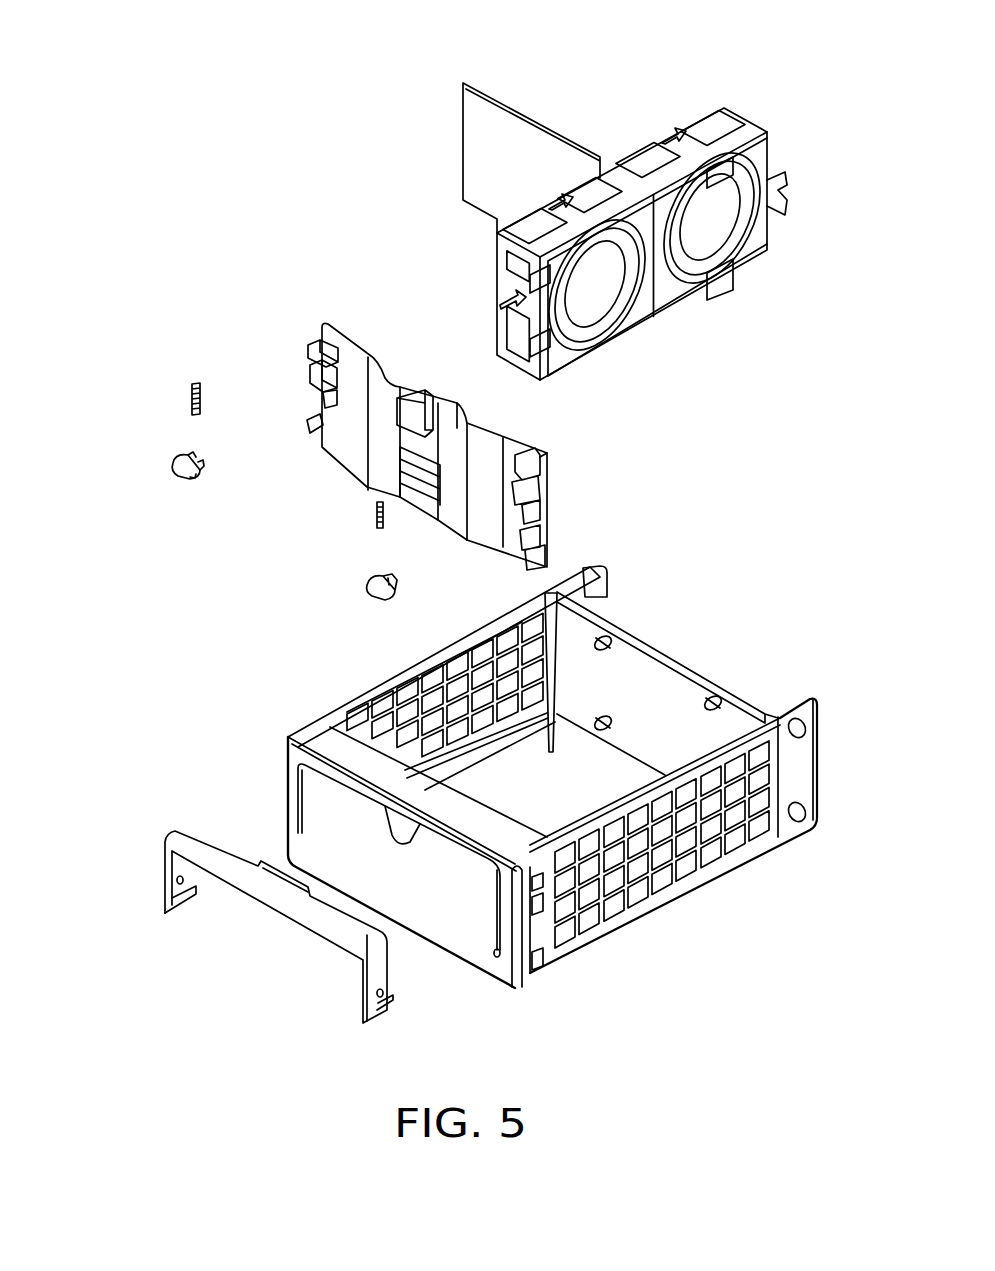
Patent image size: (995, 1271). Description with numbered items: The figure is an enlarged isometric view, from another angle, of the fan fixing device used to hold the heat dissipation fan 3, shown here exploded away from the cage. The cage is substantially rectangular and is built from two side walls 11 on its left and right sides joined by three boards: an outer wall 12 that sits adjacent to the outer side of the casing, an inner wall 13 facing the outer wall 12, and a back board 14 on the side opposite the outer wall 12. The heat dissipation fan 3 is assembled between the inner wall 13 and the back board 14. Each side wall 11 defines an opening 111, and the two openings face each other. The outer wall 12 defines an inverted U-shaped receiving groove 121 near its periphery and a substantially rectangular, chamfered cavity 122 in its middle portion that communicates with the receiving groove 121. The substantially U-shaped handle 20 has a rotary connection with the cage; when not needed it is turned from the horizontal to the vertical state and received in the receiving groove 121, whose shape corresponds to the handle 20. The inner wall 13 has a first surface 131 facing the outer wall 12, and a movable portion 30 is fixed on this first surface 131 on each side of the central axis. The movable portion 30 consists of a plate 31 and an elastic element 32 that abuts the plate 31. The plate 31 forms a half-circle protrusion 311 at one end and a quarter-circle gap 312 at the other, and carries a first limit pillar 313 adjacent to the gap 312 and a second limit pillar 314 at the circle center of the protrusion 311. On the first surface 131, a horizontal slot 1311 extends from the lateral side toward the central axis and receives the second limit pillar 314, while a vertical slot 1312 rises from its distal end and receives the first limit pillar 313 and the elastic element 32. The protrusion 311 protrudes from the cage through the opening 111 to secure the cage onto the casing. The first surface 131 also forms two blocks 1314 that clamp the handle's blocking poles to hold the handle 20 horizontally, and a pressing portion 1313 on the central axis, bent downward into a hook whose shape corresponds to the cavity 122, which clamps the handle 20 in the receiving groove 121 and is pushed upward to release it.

The heat dissipation fan 3 is at (667, 142).
The inner wall 13 is at (550, 435).
The first surface 131 is at (513, 447).
The horizontal slot 1311 is at (313, 370).
The vertical slot 1312 is at (310, 362).
The pressing portion 1313 is at (398, 423).
The block 1314 is at (323, 402).
The movable portion 30 is at (110, 407).
The plate 31 is at (172, 465).
The protrusion 311 is at (173, 455).
The gap 312 is at (193, 475).
The first limit pillar 313 is at (200, 470).
The second limit pillar 314 is at (192, 457).
The elastic element 32 is at (185, 400).
The back board 14 is at (652, 675).
The side wall 11 is at (708, 850).
The opening 111 is at (537, 903).
The outer wall 12 is at (477, 947).
The receiving groove 121 is at (300, 758).
The cavity 122 is at (320, 817).
The handle 20 is at (200, 842).